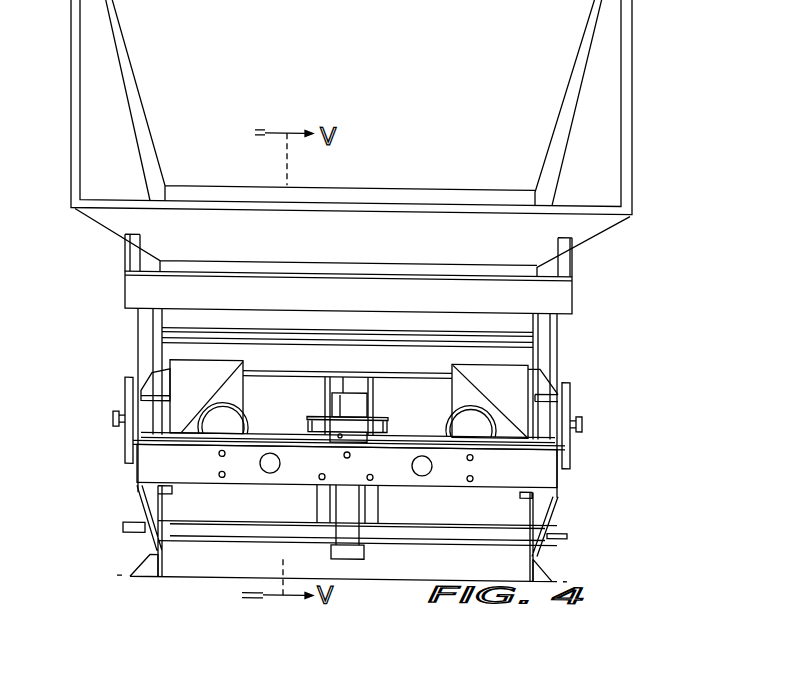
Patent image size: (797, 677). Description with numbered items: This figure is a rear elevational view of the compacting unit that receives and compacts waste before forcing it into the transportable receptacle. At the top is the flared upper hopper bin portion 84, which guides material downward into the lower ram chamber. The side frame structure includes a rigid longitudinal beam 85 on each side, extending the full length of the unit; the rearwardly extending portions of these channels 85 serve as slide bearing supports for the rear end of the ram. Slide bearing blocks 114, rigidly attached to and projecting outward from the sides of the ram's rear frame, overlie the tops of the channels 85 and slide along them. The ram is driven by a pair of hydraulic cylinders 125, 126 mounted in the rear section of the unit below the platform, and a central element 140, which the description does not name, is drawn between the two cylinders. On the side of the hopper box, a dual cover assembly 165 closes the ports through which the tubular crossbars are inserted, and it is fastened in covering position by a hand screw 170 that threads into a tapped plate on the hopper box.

The hopper bin 84 is at (578, 225).
The longitudinal beam 85 is at (152, 413).
The slide bearing block 114 is at (150, 402).
The hydraulic cylinder 125 is at (458, 416).
The hydraulic cylinder 126 is at (228, 418).
The bearing block 140 is at (338, 403).
The dual cover assembly 165 is at (114, 438).
The hand screw 170 is at (112, 414).